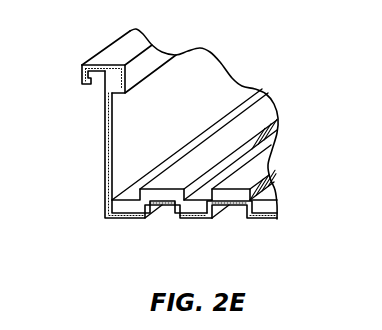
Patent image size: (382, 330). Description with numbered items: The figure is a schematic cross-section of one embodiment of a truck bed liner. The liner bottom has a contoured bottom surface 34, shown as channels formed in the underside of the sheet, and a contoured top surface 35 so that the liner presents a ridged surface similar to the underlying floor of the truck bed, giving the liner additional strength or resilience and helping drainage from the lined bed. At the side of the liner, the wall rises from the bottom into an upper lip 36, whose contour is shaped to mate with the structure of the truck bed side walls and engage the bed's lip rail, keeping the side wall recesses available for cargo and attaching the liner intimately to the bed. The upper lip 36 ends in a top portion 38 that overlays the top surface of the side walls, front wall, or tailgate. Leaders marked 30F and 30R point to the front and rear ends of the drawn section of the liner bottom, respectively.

The top portion 38 is at (118, 53).
The upper lip 36 is at (92, 95).
The contoured top surface 35 is at (250, 172).
The contoured bottom surface 34 is at (137, 230).
The front edge of base 30F is at (112, 221).
The rear edge of base 30R is at (267, 212).